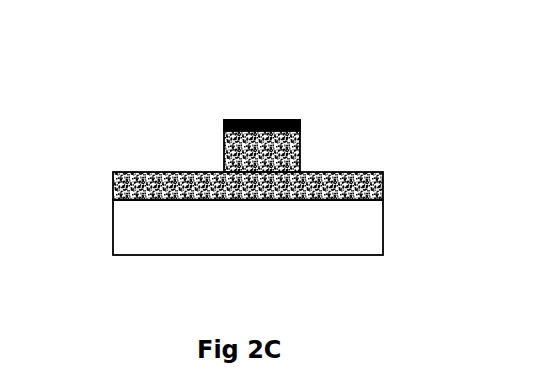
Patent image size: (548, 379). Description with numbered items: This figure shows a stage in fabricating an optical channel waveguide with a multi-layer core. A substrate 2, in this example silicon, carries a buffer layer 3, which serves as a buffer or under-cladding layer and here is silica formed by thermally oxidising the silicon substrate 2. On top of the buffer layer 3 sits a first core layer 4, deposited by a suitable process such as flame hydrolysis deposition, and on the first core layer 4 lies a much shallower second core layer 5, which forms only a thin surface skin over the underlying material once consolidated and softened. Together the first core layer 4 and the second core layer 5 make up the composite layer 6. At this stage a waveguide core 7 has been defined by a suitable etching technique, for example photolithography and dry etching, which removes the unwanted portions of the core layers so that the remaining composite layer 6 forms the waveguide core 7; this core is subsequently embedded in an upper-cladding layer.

The substrate 2 is at (112, 228).
The buffer layer 3 is at (112, 183).
The first core layer 4 is at (303, 152).
The second core layer 5 is at (302, 130).
The composite layer 6 is at (118, 125).
The waveguide core 7 is at (265, 112).